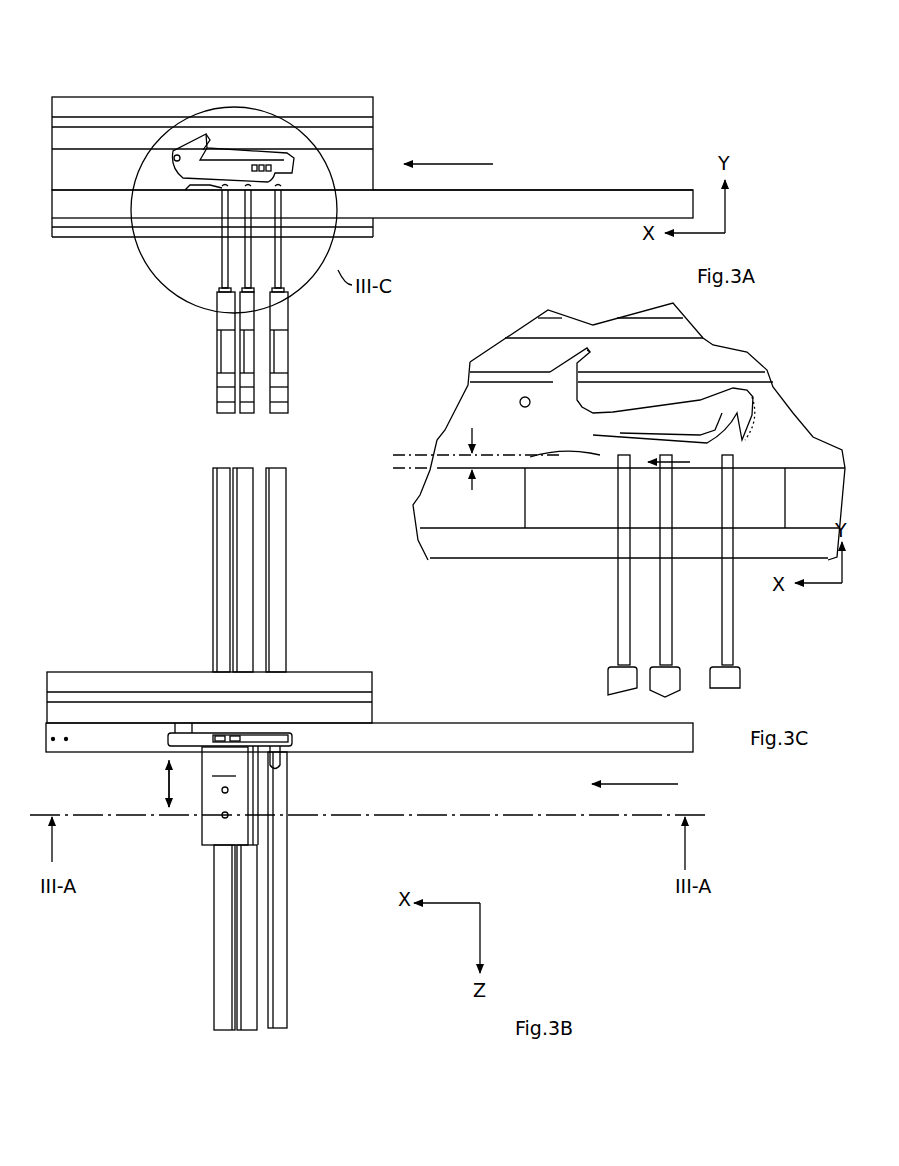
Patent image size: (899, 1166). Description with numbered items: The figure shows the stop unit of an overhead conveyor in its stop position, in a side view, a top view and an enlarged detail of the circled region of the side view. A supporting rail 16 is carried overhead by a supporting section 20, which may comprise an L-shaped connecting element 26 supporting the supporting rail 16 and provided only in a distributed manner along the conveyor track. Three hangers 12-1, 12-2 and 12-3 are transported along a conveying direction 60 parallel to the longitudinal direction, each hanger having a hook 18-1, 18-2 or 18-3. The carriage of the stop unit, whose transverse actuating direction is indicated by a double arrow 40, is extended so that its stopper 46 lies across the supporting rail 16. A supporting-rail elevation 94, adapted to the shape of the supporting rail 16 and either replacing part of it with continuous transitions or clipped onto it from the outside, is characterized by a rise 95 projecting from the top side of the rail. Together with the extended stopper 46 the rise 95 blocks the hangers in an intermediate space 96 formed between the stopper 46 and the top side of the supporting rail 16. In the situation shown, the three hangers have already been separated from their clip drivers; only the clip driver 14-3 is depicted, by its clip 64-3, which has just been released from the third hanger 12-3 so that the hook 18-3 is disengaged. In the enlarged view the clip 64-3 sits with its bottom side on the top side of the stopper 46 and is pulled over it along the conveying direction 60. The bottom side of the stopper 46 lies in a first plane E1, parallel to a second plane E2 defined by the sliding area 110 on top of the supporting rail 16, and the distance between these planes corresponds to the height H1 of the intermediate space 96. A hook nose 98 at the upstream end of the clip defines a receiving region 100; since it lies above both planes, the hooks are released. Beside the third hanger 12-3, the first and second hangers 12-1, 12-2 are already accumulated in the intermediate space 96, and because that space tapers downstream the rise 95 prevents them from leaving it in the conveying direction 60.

In FIG. 3A, the first hanger 12-1 is at (217, 393).
In FIG. 3C, the first hanger 12-1 is at (607, 678).
In FIG. 3B, the first hanger 12-1 is at (222, 1030).
In FIG. 3A, the second hanger 12-2 is at (247, 413).
In FIG. 3C, the second hanger 12-2 is at (672, 692).
In FIG. 3B, the second hanger 12-2 is at (243, 1030).
In FIG. 3A, the third hanger 12-3 is at (288, 393).
In FIG. 3C, the third hanger 12-3 is at (735, 678).
In FIG. 3B, the third hanger 12-3 is at (282, 1030).
In FIG. 3A, the clip driver 14-3 is at (279, 150).
In FIG. 3C, the clip driver 14-3 is at (668, 405).
In FIG. 3B, the clip driver 14-3 is at (185, 731).
In FIG. 3A, the supporting rail 16 is at (608, 190).
In FIG. 3B, the supporting rail 16 is at (498, 752).
In FIG. 3C, the hook of first hanger 18-1 is at (617, 620).
In FIG. 3C, the hook of second hanger 18-2 is at (672, 612).
In FIG. 3C, the hook of third hanger 18-3 is at (733, 628).
In FIG. 3A, the supporting section 20 is at (108, 97).
In FIG. 3B, the supporting section 20 is at (90, 672).
In FIG. 3A, the connecting element 26 is at (48, 97).
In FIG. 3C, the connecting element 26 is at (425, 540).
In FIG. 3B, the double arrow 40 is at (165, 783).
In FIG. 3B, the stopper 46 is at (225, 796).
In FIG. 3A, the conveying direction 60 is at (458, 163).
In FIG. 3B, the conveying direction 60 is at (642, 784).
In FIG. 3A, the clip 64-3 is at (178, 97).
In FIG. 3C, the clip 64-3 is at (555, 365).
In FIG. 3A, the supporting-rail elevation 94 is at (200, 212).
In FIG. 3C, the supporting-rail elevation 94 is at (785, 500).
In FIG. 3B, the supporting-rail elevation 94 is at (300, 752).
In FIG. 3C, the rise 95 is at (523, 456).
In FIG. 3C, the intermediate space 96 is at (682, 461).
In FIG. 3C, the hook nose 98 is at (752, 418).
In FIG. 3C, the receiving region 100 is at (731, 432).
In FIG. 3A, the sliding area 110 is at (555, 190).
In FIG. 3C, the height H1 is at (488, 459).
In FIG. 3C, the first plane E1 is at (405, 455).
In FIG. 3C, the second plane E2 is at (410, 470).